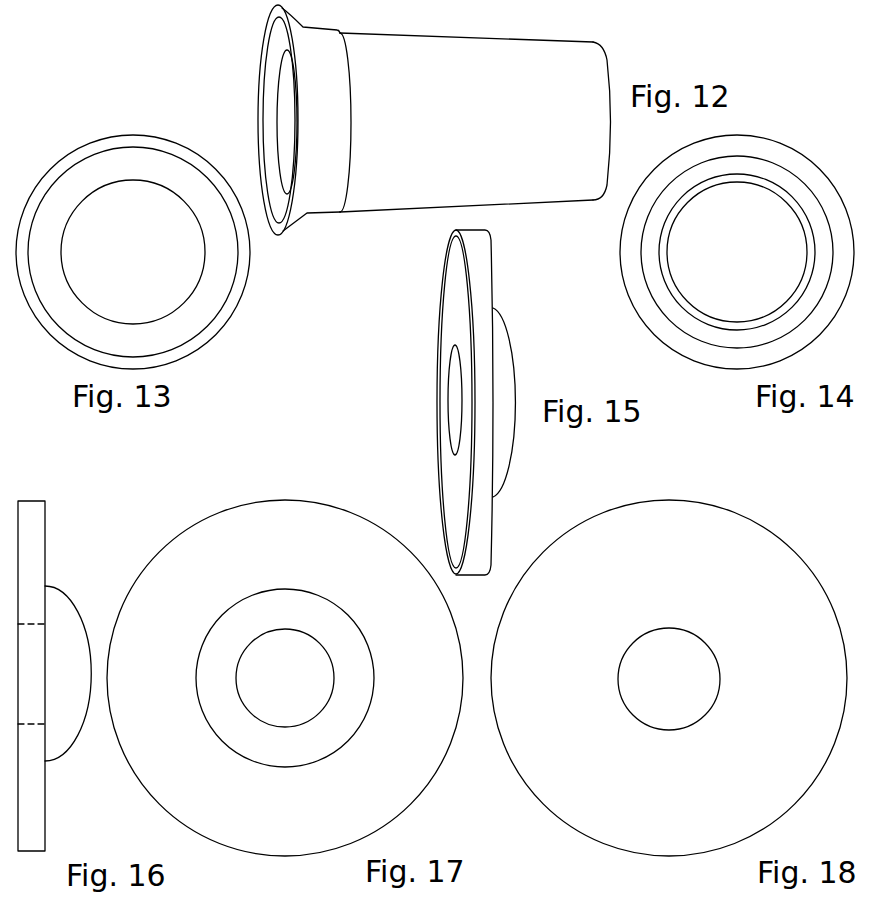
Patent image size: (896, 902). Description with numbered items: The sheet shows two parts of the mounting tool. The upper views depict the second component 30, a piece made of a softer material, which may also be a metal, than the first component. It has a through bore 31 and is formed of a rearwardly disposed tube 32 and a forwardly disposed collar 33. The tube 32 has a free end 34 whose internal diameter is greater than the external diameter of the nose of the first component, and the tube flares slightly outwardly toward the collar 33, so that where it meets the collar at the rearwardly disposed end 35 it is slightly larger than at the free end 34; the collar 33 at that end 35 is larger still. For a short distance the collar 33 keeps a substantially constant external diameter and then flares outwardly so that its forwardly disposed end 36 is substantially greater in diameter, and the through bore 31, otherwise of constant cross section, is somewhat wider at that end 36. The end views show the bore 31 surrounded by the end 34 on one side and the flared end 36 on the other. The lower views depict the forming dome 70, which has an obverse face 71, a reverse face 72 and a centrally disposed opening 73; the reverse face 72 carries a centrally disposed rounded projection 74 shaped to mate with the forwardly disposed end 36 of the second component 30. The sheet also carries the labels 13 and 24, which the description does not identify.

In FIG. 15, the bore hole 13 is at (455, 392).
In FIG. 12, the tube 24 is at (353, 0).
In FIG. 12, the second component 30 is at (440, 138).
In FIG. 13, the second component 30 is at (146, 224).
In FIG. 14, the second component 30 is at (703, 240).
In FIG. 12, the through bore 31 is at (282, 107).
In FIG. 13, the through bore 31 is at (143, 265).
In FIG. 14, the through bore 31 is at (757, 267).
In FIG. 12, the tube 32 is at (566, 29).
In FIG. 12, the collar 33 is at (311, 217).
In FIG. 12, the free end 34 is at (610, 157).
In FIG. 14, the free end 34 is at (818, 181).
In FIG. 12, the rearwardly disposed end 35 is at (466, 122).
In FIG. 12, the forwardly disposed end 36 is at (276, 10).
In FIG. 13, the forwardly disposed end 36 is at (230, 304).
In FIG. 15, the forming dome 70 is at (453, 402).
In FIG. 16, the forming dome 70 is at (72, 667).
In FIG. 17, the forming dome 70 is at (298, 656).
In FIG. 18, the forming dome 70 is at (669, 676).
In FIG. 15, the obverse face 71 is at (450, 291).
In FIG. 18, the obverse face 71 is at (733, 555).
In FIG. 15, the reverse face 72 is at (493, 543).
In FIG. 17, the reverse face 72 is at (211, 542).
In FIG. 17, the centrally disposed opening 73 is at (303, 688).
In FIG. 18, the centrally disposed opening 73 is at (669, 679).
In FIG. 15, the rounded projection 74 is at (512, 424).
In FIG. 16, the rounded projection 74 is at (79, 613).
In FIG. 17, the rounded projection 74 is at (275, 606).